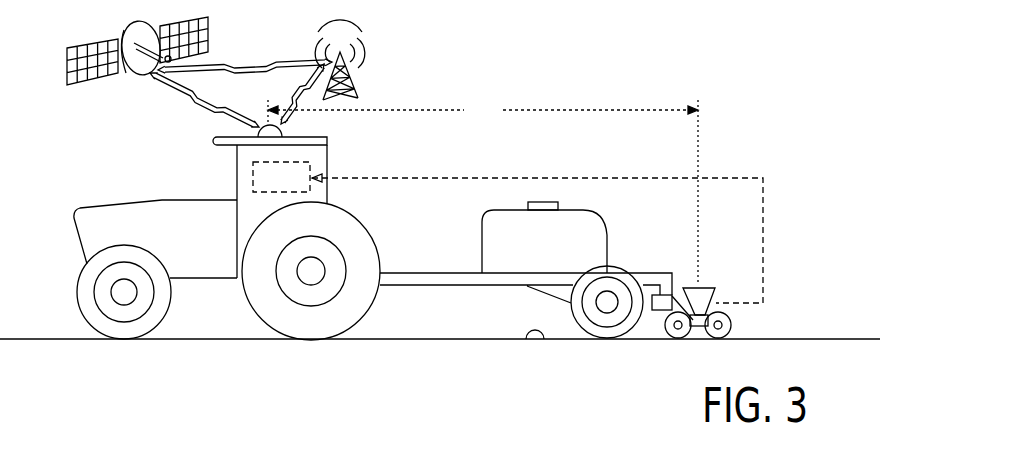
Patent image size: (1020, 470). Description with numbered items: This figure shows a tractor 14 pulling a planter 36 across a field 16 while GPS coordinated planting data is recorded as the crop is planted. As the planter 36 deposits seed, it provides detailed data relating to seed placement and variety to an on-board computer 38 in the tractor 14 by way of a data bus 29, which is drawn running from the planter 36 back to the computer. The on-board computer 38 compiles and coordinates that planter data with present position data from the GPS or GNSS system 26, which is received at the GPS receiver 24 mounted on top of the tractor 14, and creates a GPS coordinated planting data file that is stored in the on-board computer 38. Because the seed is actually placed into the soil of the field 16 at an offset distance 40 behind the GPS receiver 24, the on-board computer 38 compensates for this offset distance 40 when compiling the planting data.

The tractor 14 is at (162, 200).
The field 16 is at (541, 343).
The GPS receiver 24 is at (257, 128).
The GPS or GNSS system 26 is at (378, 61).
The data bus 29 is at (530, 170).
The planter 36 is at (599, 216).
The on-board computer 38 is at (313, 170).
The offset distance 40 is at (483, 191).